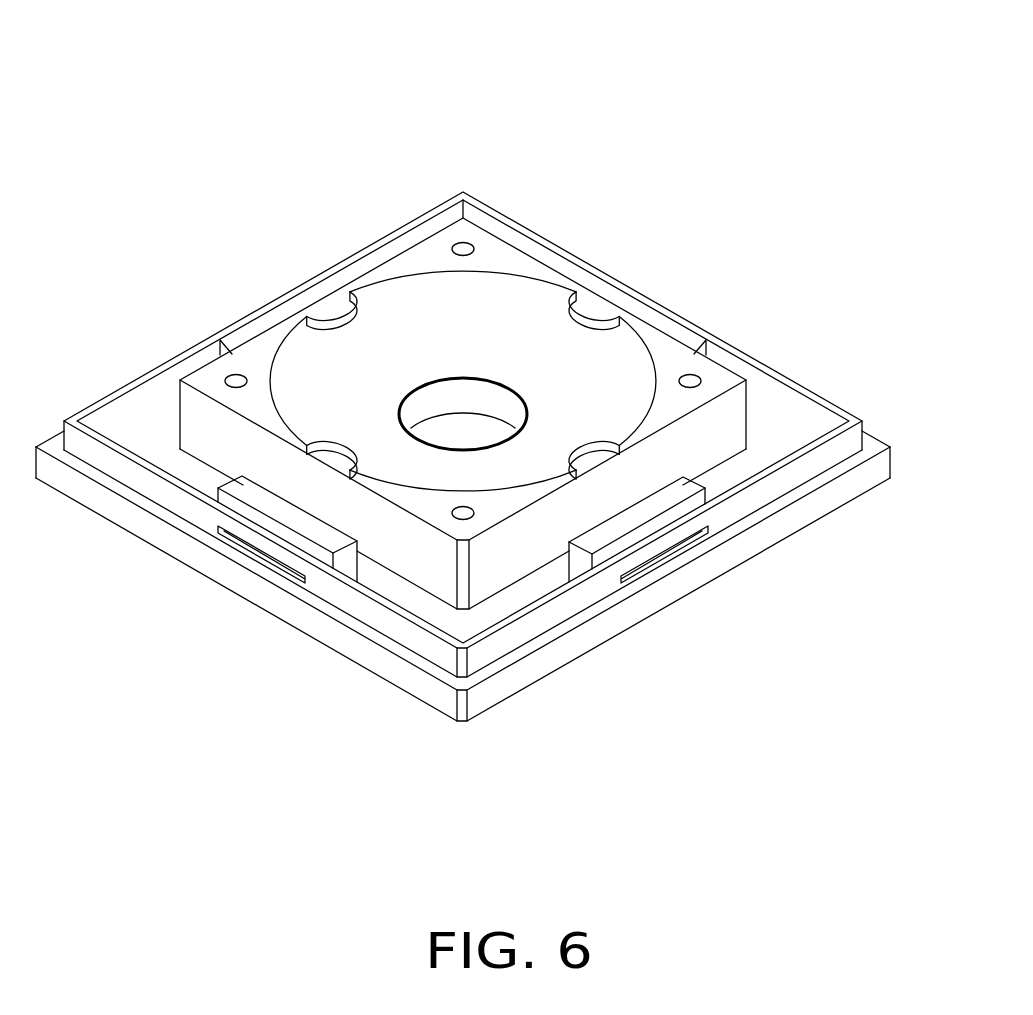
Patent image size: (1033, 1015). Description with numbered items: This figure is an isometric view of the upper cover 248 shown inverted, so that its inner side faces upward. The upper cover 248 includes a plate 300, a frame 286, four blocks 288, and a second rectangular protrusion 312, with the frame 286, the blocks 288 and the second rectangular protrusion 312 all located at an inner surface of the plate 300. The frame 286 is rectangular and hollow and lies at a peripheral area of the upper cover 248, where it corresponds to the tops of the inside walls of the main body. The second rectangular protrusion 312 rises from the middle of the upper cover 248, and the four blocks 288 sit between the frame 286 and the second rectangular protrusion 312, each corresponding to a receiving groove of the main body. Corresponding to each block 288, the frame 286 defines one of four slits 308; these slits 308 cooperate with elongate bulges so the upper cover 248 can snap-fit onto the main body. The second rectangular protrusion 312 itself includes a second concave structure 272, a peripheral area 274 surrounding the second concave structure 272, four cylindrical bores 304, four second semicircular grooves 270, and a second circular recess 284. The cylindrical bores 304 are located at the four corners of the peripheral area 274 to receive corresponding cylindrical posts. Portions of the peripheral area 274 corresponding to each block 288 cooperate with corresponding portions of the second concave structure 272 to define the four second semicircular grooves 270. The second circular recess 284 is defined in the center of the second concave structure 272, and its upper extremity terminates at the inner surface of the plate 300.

The upper cover 248 is at (526, 75).
The second semicircular grooves 270 is at (333, 315).
The second concave structure 272 is at (468, 305).
The peripheral area 274 is at (208, 383).
The second circular recess 284 is at (467, 402).
The frame 286 is at (775, 484).
The blocks 288 is at (677, 492).
The plate 300 is at (555, 655).
The cylindrical bores 304 is at (236, 382).
The slits 308 is at (655, 558).
The second rectangular protrusion 312 is at (417, 104).